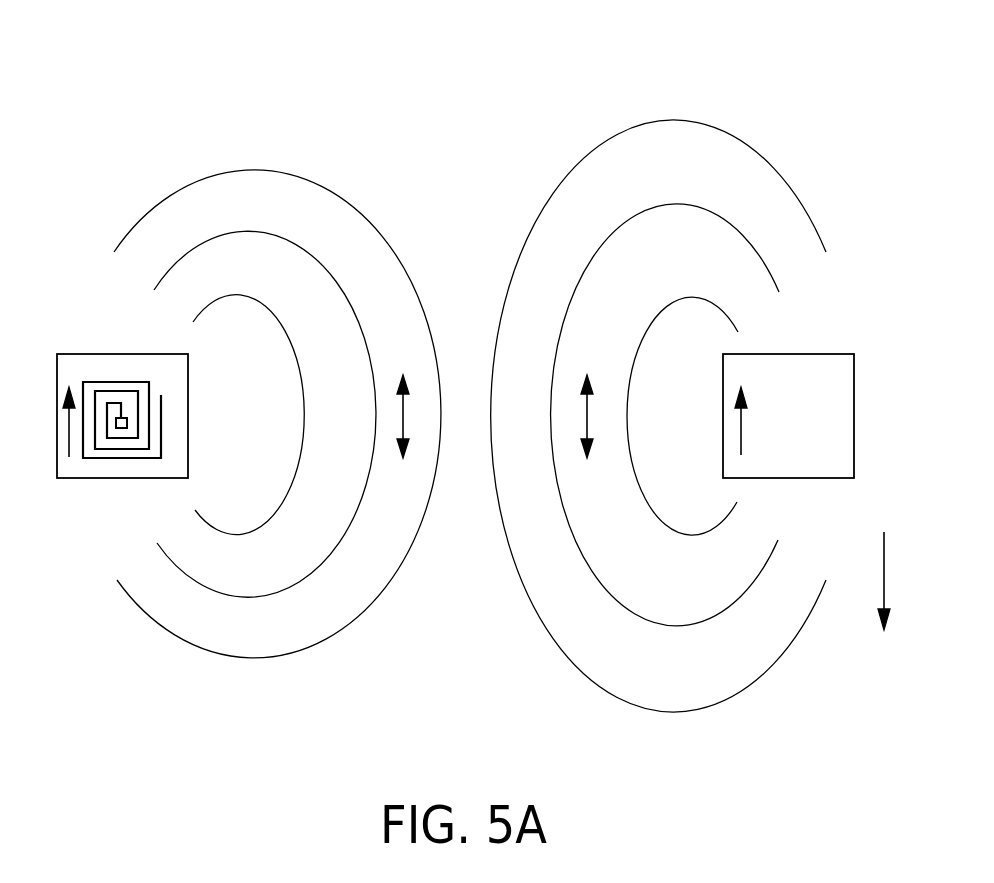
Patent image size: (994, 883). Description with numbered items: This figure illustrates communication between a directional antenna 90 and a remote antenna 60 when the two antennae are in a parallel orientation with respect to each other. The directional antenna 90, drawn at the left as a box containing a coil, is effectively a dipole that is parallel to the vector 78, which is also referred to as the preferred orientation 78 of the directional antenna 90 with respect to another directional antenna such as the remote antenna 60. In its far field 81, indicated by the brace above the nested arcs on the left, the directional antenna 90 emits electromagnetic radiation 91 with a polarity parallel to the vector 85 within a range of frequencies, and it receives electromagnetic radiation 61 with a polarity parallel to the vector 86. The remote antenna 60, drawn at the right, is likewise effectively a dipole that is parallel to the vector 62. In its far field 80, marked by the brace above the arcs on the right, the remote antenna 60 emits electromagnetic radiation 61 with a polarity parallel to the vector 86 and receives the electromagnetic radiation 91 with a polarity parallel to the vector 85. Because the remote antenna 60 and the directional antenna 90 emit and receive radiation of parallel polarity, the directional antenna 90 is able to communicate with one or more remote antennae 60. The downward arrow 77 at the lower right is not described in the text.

The remote antenna 60 is at (857, 450).
The electromagnetic radiation 61 is at (548, 640).
The vector 62 is at (741, 412).
The direction of movement 77 is at (885, 585).
The vector 78 is at (70, 410).
The far field 80 is at (703, 100).
The far field 81 is at (447, 158).
The vector 85 is at (405, 415).
The vector 86 is at (587, 415).
The directional antenna 90 is at (182, 450).
The electromagnetic radiation 91 is at (240, 658).